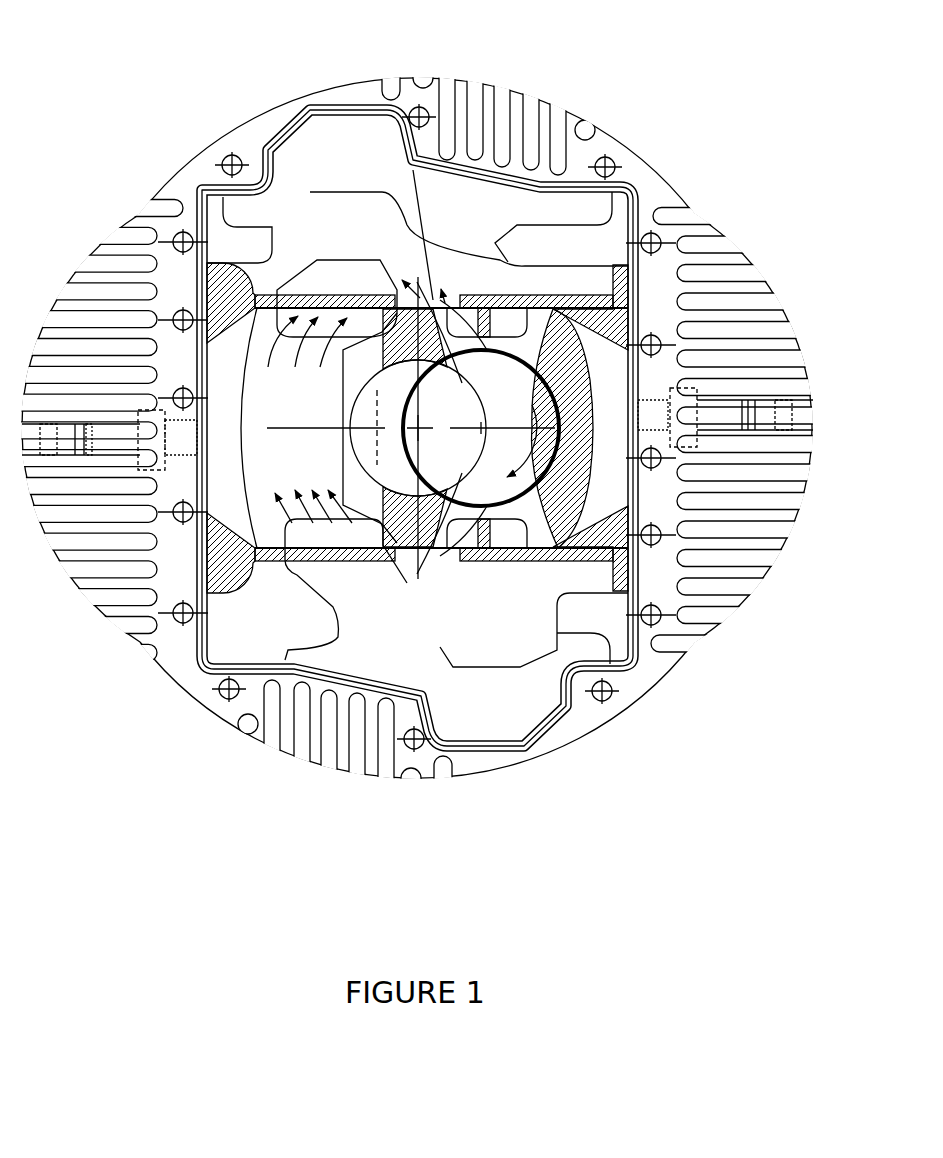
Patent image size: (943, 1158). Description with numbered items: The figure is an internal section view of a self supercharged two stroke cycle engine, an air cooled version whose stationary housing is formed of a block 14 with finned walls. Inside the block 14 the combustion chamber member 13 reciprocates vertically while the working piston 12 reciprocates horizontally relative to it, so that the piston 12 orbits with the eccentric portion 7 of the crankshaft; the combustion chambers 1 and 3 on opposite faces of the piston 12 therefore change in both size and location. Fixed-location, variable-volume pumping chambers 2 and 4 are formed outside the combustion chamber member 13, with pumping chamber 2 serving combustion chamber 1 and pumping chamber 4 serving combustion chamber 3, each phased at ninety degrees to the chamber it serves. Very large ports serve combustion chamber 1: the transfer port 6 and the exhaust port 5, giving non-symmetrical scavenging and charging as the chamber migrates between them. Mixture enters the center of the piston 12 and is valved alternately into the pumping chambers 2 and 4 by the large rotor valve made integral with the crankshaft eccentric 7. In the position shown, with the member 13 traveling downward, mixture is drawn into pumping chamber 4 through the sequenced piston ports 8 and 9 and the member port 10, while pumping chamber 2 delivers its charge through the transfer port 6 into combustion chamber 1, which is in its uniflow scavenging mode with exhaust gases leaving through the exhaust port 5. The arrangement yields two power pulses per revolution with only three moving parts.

The combustion chamber 1 is at (363, 428).
The pumping chamber 2 is at (393, 22).
The combustion chamber 3 is at (637, 378).
The pumping chamber 4 is at (417, 206).
The exhaust port 5 is at (333, 327).
The transfer port 6 is at (327, 543).
The crankshaft eccentric and rotary valve 7 is at (562, 445).
The OP port 8 is at (452, 322).
The OP port 9 is at (510, 325).
The CCM port 10 is at (438, 295).
The working piston 12 is at (583, 493).
The combustion chamber member 13 is at (583, 573).
The block 14 is at (513, 170).